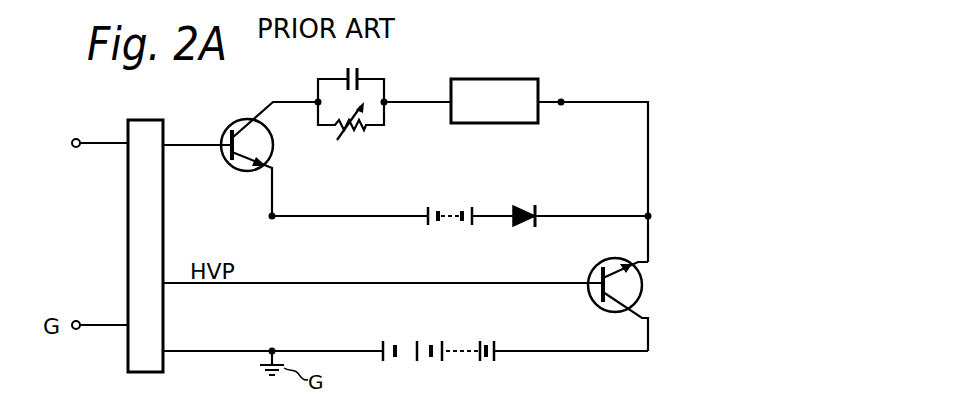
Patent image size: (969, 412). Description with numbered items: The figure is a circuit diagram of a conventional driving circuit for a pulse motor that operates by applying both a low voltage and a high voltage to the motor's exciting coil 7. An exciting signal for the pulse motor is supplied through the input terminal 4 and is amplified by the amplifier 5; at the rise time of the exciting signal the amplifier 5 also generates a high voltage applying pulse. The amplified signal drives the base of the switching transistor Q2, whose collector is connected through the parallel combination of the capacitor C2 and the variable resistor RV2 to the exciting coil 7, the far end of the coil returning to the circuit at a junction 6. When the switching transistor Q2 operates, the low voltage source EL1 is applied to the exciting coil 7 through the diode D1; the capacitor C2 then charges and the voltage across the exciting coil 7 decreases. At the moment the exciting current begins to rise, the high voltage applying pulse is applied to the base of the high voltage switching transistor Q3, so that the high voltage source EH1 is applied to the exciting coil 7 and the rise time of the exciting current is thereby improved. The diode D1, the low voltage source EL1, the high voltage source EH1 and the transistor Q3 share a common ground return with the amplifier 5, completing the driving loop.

The input terminal 4 is at (78, 147).
The amplifier 5 is at (147, 120).
The connection junction 6 is at (561, 105).
The exciting coil 7 is at (505, 79).
The switching transistor Q2 is at (273, 145).
The high voltage switching transistor Q3 is at (642, 285).
The capacitor C2 is at (356, 66).
The variable resistor RV2 is at (356, 128).
The diode D1 is at (522, 205).
The low voltage source EL1 is at (392, 233).
The high voltage source EH1 is at (515, 338).